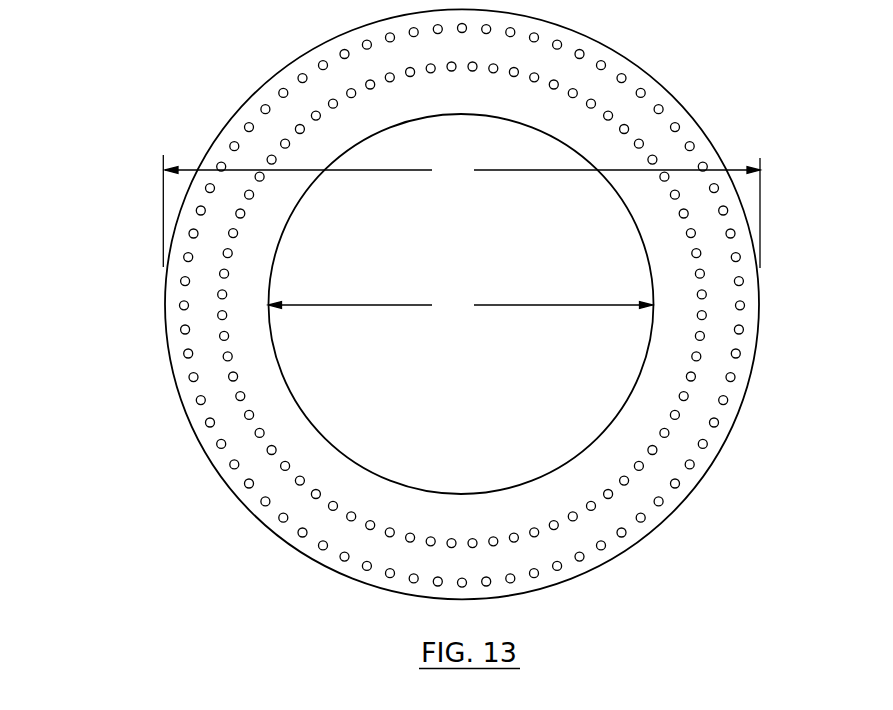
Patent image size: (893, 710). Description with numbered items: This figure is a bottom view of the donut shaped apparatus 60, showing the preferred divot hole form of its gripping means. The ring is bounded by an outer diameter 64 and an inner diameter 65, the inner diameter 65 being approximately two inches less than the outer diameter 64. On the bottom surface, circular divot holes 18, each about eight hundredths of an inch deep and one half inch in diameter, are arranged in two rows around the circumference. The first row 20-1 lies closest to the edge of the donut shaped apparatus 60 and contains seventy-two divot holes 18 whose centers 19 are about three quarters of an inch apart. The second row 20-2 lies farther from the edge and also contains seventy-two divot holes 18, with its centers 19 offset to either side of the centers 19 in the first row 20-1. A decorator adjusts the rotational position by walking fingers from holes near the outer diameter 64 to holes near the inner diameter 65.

The donut shaped apparatus 60 is at (163, 305).
The outer diameter 64 is at (461, 211).
The inner diameter 65 is at (461, 305).
The circular divot holes 18 is at (563, 572).
The center 19 is at (643, 523).
The first row 20-1 is at (707, 448).
The second row 20-2 is at (656, 456).